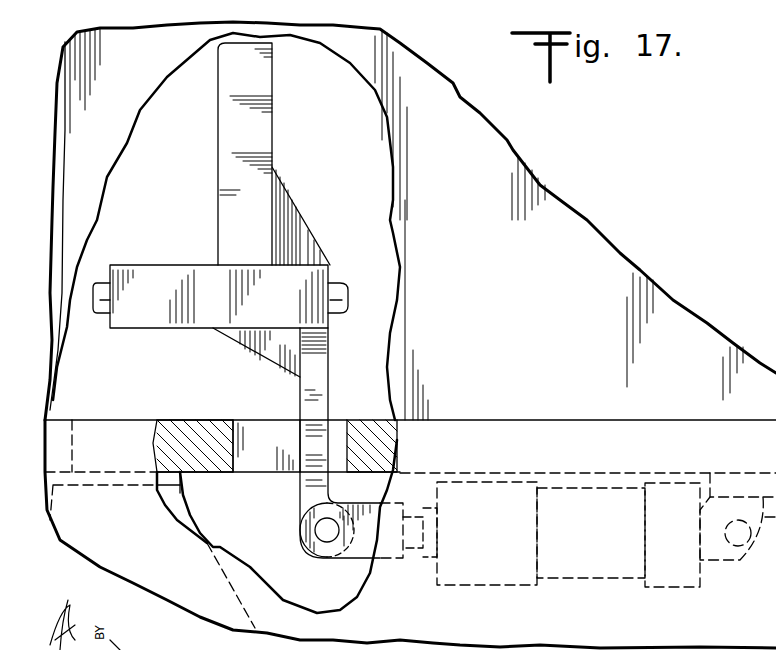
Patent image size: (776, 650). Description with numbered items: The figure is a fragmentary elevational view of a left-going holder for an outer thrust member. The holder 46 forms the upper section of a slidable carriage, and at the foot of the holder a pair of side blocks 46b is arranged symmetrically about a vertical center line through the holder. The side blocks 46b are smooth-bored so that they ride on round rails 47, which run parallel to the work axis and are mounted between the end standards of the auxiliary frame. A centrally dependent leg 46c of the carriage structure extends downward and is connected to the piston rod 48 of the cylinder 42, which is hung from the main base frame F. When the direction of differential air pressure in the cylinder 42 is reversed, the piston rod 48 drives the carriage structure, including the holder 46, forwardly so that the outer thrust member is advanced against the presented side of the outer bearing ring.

The holder 46 is at (265, 135).
The side block 46b is at (147, 275).
The centrally dependent leg 46c is at (307, 392).
The round rail 47 is at (340, 285).
The piston rod 48 is at (347, 563).
The main base frame F is at (187, 420).
The cylinder 42 is at (613, 580).